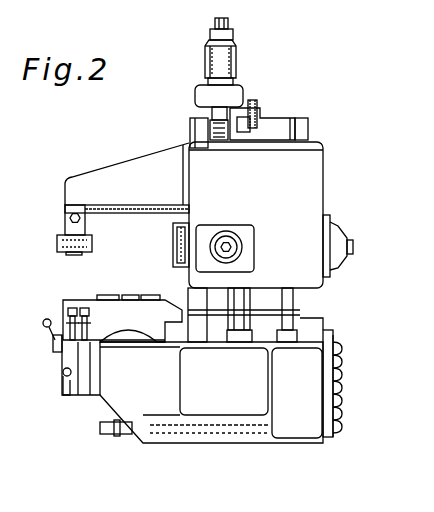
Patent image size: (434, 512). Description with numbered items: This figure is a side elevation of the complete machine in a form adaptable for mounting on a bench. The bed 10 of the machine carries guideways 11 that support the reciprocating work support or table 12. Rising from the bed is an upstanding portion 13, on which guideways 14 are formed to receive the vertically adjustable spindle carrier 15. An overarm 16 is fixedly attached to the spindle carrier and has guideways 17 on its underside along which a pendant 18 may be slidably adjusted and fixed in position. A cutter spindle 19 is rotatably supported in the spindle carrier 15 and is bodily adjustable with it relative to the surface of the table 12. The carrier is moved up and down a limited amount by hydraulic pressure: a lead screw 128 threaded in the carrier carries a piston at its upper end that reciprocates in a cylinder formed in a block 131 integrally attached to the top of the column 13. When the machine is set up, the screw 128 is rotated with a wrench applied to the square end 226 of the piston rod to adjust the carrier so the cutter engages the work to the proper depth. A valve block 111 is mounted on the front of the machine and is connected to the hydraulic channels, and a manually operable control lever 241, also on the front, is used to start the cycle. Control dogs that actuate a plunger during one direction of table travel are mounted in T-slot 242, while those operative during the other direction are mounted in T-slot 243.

The bed 10 is at (118, 388).
The guideways 11 is at (157, 332).
The table 12 is at (65, 292).
The upstanding portion 13 is at (275, 117).
The guideways 14 is at (197, 121).
The spindle carrier 15 is at (313, 172).
The overarm 16 is at (137, 157).
The guideways 17 is at (123, 213).
The pendant 18 is at (62, 222).
The cutter spindle 19 is at (172, 252).
The valve block 111 is at (62, 332).
The lead screw 128 is at (212, 129).
The block 131 is at (230, 95).
The square end 226 is at (228, 23).
The control lever 241 is at (55, 337).
The T-slot 242 is at (84, 307).
The T-slot 243 is at (72, 300).